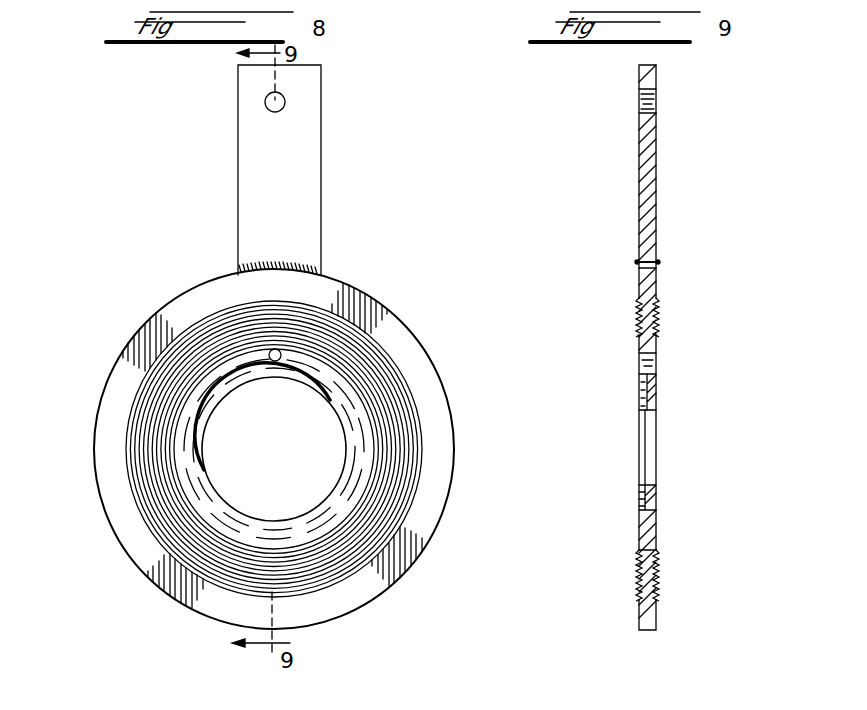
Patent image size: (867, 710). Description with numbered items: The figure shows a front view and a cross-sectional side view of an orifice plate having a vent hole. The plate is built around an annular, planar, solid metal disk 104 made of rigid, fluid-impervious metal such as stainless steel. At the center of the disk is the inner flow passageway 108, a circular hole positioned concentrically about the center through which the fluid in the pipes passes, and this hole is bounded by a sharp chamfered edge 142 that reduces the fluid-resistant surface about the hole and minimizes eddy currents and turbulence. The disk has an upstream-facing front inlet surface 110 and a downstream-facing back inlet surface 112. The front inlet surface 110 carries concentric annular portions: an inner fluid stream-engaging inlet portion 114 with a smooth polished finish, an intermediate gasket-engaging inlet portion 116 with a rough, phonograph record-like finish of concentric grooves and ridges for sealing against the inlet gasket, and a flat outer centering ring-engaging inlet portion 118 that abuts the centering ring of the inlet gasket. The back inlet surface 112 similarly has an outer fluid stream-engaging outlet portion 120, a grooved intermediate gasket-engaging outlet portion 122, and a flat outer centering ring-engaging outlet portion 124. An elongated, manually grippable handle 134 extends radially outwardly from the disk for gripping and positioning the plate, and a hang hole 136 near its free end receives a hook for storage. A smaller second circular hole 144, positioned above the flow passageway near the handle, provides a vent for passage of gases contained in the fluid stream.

In FIG. 8, the disk 104 is at (185, 592).
In FIG. 9, the disk 104 is at (642, 632).
In FIG. 8, the inner flow passageway 108 is at (337, 484).
In FIG. 9, the inner flow passageway 108 is at (639, 472).
In FIG. 8, the front inlet surface 110 is at (106, 480).
In FIG. 9, the front inlet surface 110 is at (639, 278).
In FIG. 9, the back inlet surface 112 is at (657, 275).
In FIG. 8, the inner fluid stream-engaging inlet portion 114 is at (187, 448).
In FIG. 9, the inner fluid stream-engaging inlet portion 114 is at (639, 526).
In FIG. 8, the intermediate gasket-engaging inlet portion 116 is at (152, 386).
In FIG. 9, the intermediate gasket-engaging inlet portion 116 is at (638, 313).
In FIG. 8, the outer centering ring-engaging inlet portion 118 is at (398, 565).
In FIG. 9, the outer centering ring-engaging inlet portion 118 is at (639, 617).
In FIG. 9, the outer fluid stream-engaging outlet portion 120 is at (657, 528).
In FIG. 9, the intermediate gasket-engaging outlet portion 122 is at (657, 310).
In FIG. 9, the outer centering ring-engaging outlet portion 124 is at (657, 615).
In FIG. 8, the handle 134 is at (238, 150).
In FIG. 9, the handle 134 is at (639, 172).
In FIG. 8, the hang hole 136 is at (286, 104).
In FIG. 9, the hang hole 136 is at (656, 103).
In FIG. 9, the chamfered edge 142 is at (655, 383).
In FIG. 8, the second circular hole 144 is at (270, 350).
In FIG. 9, the second circular hole 144 is at (639, 366).